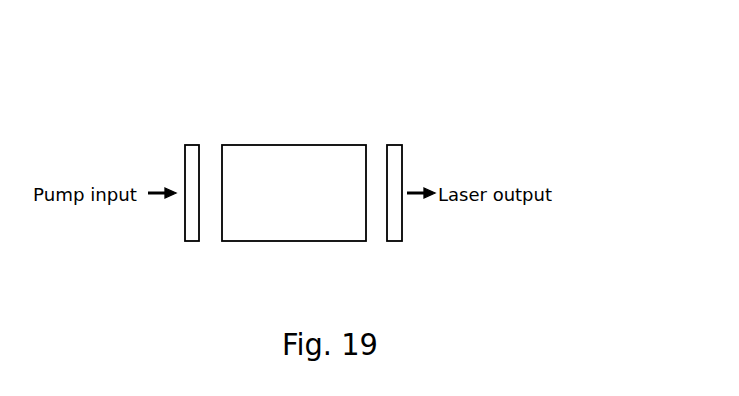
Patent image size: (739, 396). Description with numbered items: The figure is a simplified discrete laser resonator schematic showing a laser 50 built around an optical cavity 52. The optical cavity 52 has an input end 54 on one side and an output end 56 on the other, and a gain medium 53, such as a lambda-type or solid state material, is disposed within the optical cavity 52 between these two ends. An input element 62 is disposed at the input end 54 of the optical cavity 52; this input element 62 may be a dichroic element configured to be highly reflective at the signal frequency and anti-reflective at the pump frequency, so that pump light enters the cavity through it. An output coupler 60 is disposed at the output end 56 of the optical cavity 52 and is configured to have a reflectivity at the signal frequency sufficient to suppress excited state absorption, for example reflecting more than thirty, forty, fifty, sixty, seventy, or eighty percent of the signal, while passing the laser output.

The laser 50 is at (120, 79).
The optical cavity 52 is at (407, 79).
The gain medium 53 is at (305, 204).
The input end 54 is at (222, 150).
The output end 56 is at (366, 151).
The output coupler 60 is at (397, 143).
The input element 62 is at (188, 143).